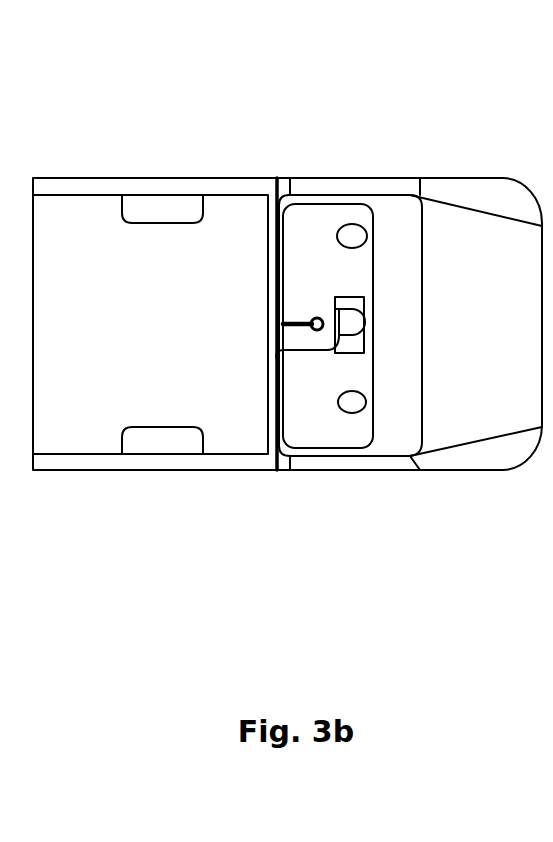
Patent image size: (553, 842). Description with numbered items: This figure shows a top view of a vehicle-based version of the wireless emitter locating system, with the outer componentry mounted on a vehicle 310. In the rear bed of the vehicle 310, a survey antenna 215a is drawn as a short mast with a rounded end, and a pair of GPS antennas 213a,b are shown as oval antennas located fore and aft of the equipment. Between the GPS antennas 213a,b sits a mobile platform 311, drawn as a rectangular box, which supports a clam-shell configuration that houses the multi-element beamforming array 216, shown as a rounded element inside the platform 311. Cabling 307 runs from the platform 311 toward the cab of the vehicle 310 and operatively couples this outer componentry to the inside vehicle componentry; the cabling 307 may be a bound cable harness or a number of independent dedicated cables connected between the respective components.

The vehicle 310 is at (287, 324).
The survey antenna 215a is at (288, 318).
The multi-element beamforming array 216 is at (350, 305).
The GPS antennas 213a,b is at (364, 391).
The cabling 307 is at (301, 357).
The mobile platform 311 is at (340, 358).